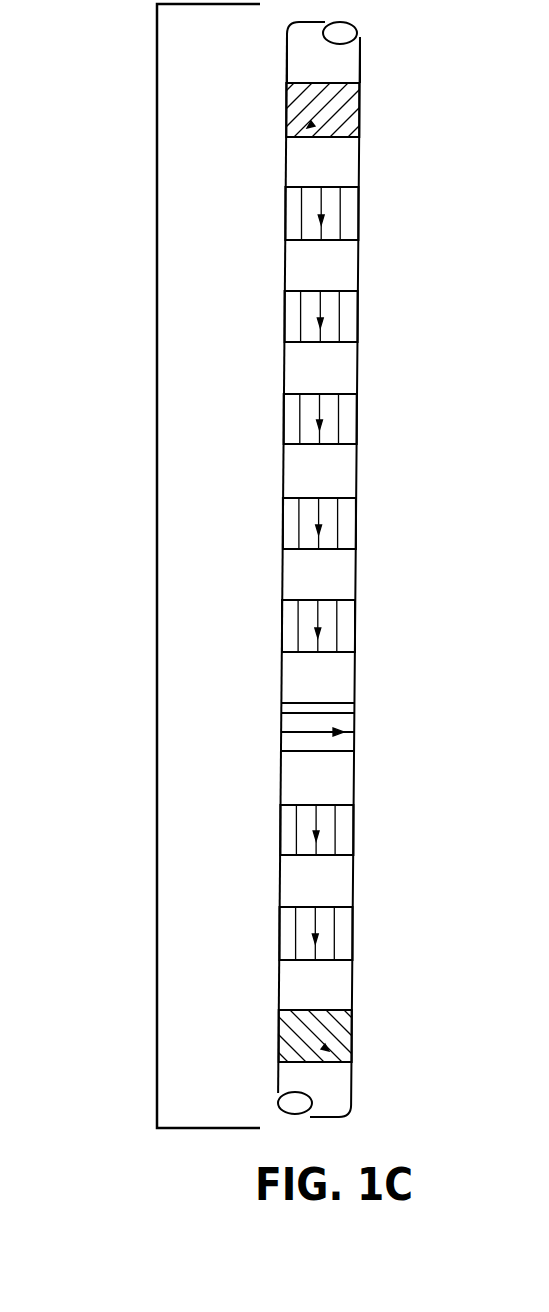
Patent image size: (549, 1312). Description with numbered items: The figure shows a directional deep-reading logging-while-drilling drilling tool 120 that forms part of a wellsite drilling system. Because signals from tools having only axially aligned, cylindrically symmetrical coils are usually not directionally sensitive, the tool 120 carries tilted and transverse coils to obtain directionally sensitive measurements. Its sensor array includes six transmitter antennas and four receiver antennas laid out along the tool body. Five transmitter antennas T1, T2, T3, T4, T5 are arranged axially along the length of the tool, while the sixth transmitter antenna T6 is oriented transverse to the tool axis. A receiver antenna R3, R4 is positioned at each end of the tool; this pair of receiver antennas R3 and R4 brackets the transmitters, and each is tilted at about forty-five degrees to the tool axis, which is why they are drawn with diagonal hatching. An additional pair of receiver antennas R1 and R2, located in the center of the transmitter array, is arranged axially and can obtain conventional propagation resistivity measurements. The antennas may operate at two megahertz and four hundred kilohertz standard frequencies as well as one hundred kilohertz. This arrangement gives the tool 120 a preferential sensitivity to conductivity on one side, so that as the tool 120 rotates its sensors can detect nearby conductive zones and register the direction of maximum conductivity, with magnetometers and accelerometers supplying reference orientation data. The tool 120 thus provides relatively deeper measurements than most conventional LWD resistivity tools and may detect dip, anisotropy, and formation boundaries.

The directional deep-reading logging-while-drilling drilling tool 120 is at (157, 461).
The receiver antenna R3 is at (359, 113).
The transmitter antenna T5 is at (358, 213).
The transmitter antenna T3 is at (358, 317).
The transmitter antenna T1 is at (357, 423).
The receiver antenna R1 is at (356, 527).
The receiver antenna R2 is at (355, 630).
The transmitter antenna T6 is at (354, 735).
The transmitter antenna T2 is at (353, 835).
The transmitter antenna T4 is at (352, 932).
The receiver antenna R4 is at (352, 1032).